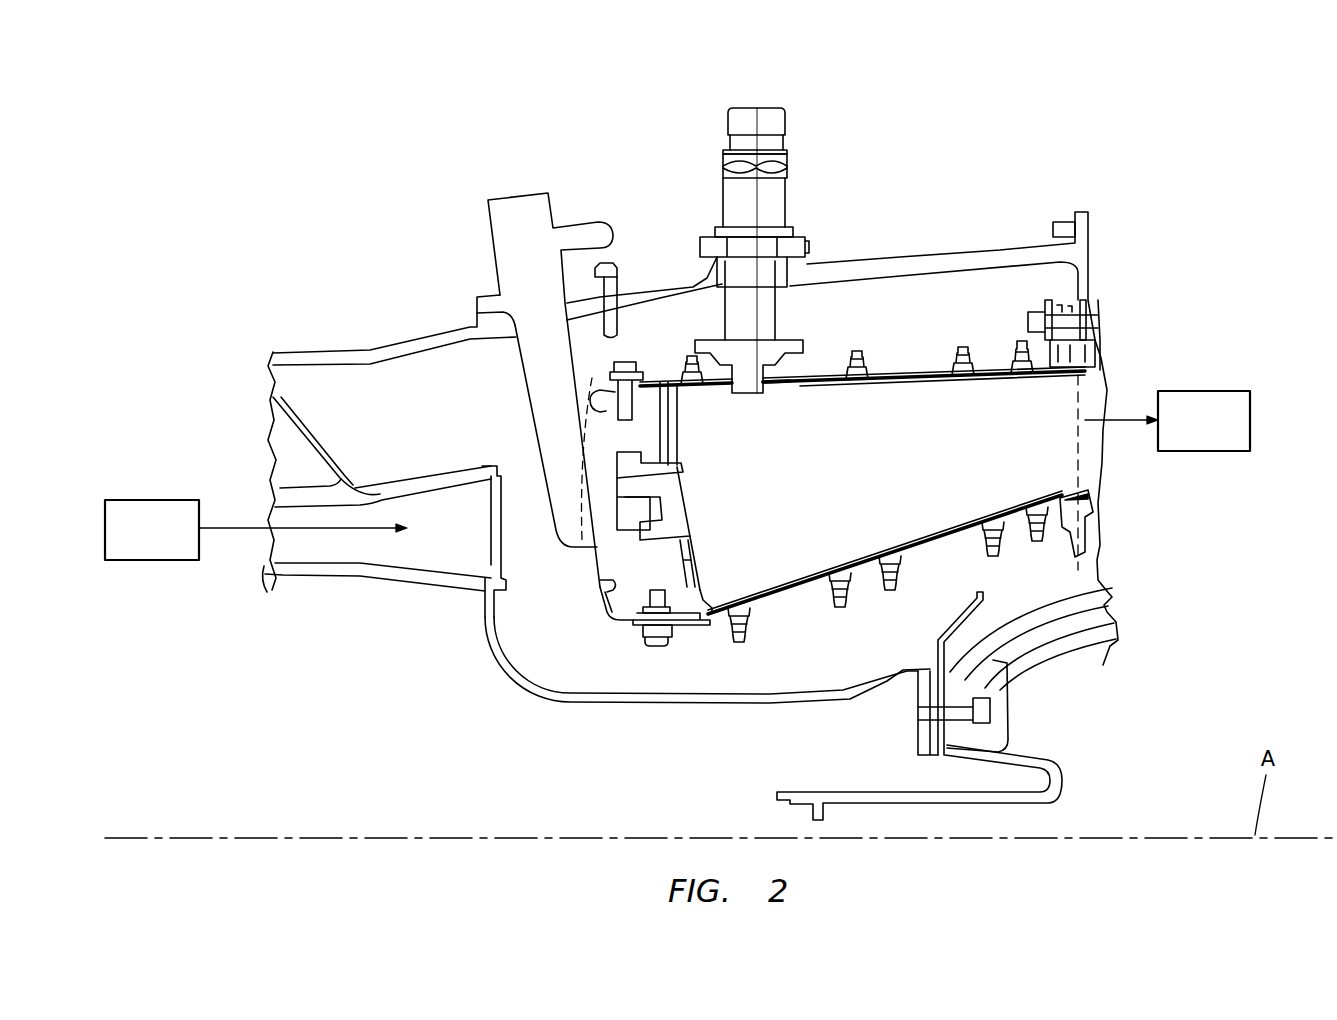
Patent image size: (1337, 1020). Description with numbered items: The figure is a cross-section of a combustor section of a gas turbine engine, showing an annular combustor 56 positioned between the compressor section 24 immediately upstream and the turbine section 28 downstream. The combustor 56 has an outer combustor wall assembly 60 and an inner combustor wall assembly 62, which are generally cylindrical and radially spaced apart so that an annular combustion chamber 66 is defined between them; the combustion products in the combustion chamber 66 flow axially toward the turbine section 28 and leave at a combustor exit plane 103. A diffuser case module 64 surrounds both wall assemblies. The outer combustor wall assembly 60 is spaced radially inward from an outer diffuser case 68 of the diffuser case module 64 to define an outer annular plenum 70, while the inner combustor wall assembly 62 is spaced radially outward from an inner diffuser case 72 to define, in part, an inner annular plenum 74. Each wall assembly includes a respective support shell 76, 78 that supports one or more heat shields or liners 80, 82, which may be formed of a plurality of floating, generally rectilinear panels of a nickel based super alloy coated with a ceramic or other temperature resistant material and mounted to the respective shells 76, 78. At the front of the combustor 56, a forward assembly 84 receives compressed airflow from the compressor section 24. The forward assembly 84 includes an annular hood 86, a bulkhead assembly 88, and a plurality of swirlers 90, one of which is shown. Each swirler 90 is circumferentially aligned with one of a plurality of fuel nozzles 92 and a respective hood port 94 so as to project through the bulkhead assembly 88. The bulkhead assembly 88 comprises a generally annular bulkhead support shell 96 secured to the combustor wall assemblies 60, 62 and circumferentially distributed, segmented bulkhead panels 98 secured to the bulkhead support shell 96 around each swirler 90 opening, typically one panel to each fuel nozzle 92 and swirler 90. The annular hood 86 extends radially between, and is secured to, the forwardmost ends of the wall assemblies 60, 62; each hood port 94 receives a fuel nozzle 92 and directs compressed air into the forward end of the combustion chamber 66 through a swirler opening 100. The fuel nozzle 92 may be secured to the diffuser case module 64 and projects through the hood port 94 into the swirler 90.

The compressor section 24 is at (141, 543).
The turbine section 28 is at (1193, 433).
The annular combustor 56 is at (1008, 155).
The outer combustor wall assembly 60 is at (917, 360).
The inner combustor wall assembly 62 is at (865, 585).
The diffuser case module 64 is at (905, 248).
The annular combustion chamber 66 is at (876, 461).
The outer diffuser case 68 is at (842, 258).
The outer annular plenum 70 is at (826, 312).
The inner diffuser case 72 is at (653, 706).
The inner annular plenum 74 is at (808, 672).
The support shell 76 is at (885, 374).
The support shell 78 is at (953, 540).
The liner 80 is at (788, 393).
The liner 82 is at (792, 575).
The forward assembly 84 is at (598, 638).
The annular hood 86 is at (648, 584).
The bulkhead assembly 88 is at (680, 438).
The swirler 90 is at (687, 538).
The fuel nozzle 92 is at (524, 319).
The hood port 94 is at (601, 578).
The bulkhead support shell 96 is at (613, 613).
The bulkhead panel 98 is at (697, 560).
The swirler opening 100 is at (693, 498).
The combustor exit plane 103 is at (1077, 457).